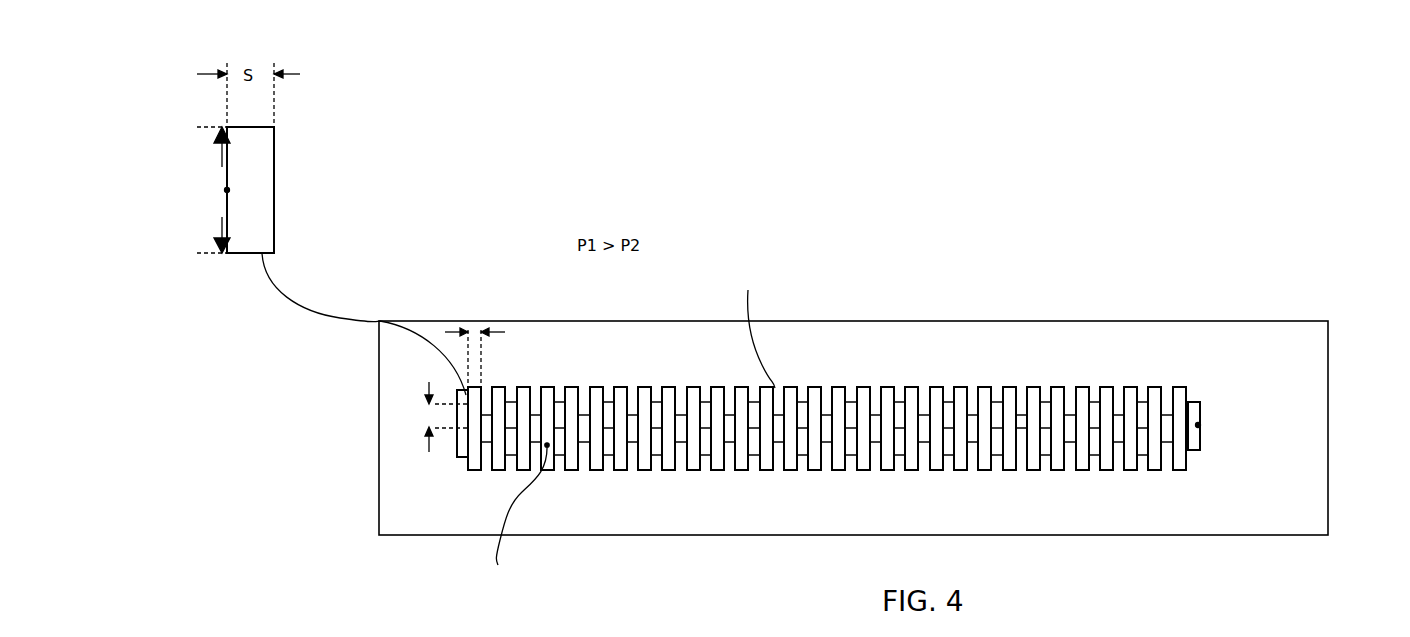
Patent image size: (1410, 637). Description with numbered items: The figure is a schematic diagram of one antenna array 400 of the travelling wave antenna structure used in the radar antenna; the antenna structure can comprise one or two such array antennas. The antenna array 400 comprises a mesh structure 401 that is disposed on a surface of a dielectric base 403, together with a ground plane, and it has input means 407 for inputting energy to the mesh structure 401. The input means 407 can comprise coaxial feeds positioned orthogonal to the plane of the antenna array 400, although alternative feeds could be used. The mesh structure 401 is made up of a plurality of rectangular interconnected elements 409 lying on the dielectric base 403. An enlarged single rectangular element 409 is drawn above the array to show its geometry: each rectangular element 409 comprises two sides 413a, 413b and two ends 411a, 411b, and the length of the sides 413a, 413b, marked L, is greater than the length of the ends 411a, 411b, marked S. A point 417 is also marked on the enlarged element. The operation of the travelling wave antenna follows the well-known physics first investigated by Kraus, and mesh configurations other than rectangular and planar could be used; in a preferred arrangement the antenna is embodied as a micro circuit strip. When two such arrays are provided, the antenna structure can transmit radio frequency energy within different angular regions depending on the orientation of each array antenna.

The antenna array 400 is at (748, 338).
The mesh structure 401 is at (930, 387).
The dielectric base 403 is at (1262, 340).
The input means 407 is at (1198, 425).
The rectangular element 409 is at (244, 190).
The end 411a is at (258, 253).
The end 411b is at (247, 122).
The side 413a is at (220, 158).
The side 413b is at (274, 185).
The center point of electrode finger 417 is at (227, 190).